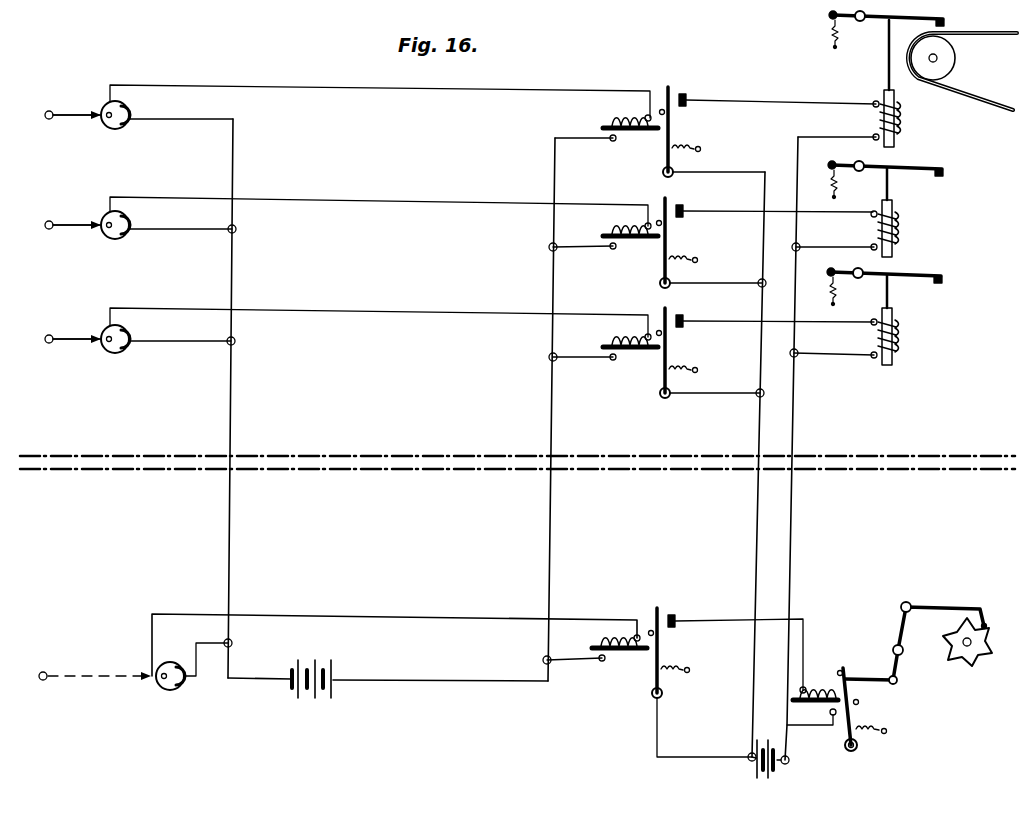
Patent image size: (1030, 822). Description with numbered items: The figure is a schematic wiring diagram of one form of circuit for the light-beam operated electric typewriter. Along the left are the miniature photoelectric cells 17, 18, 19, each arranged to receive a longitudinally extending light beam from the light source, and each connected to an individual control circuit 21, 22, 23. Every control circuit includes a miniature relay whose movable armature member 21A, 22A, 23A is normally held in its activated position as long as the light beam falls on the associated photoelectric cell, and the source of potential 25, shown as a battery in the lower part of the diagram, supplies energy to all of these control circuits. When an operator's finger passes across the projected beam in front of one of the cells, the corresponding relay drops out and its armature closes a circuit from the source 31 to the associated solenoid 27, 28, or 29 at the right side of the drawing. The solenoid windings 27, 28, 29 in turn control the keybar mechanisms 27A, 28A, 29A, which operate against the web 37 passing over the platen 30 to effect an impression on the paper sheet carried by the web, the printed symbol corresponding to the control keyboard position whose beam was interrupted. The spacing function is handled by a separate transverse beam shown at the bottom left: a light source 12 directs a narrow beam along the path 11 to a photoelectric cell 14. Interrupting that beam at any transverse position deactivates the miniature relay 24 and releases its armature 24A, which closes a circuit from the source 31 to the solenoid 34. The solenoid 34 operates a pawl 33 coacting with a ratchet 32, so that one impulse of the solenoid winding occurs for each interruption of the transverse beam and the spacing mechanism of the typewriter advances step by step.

The light beam path 11 is at (99, 684).
The light source 12 is at (45, 670).
The photoelectric cell 14 is at (163, 690).
The photoelectric cell 17 is at (112, 130).
The photoelectric cell 18 is at (112, 240).
The photoelectric cell 19 is at (112, 354).
The control circuit 21 is at (626, 114).
The armature member 21A is at (674, 96).
The control circuit 22 is at (619, 226).
The armature member 22A is at (672, 206).
The control circuit 23 is at (619, 337).
The armature member 23A is at (672, 317).
The miniature relay 24 is at (611, 638).
The armature 24A is at (663, 612).
The source of potential 25 is at (336, 676).
The solenoid 27 is at (900, 122).
The keybar mechanism 27A is at (830, 20).
The solenoid 28 is at (898, 232).
The keybar mechanism 28A is at (945, 171).
The solenoid 29 is at (898, 340).
The keybar mechanism 29A is at (945, 278).
The platen 30 is at (955, 62).
The source 31 is at (790, 760).
The ratchet 32 is at (953, 662).
The pawl 33 is at (940, 606).
The solenoid 34 is at (818, 690).
The web 37 is at (975, 105).